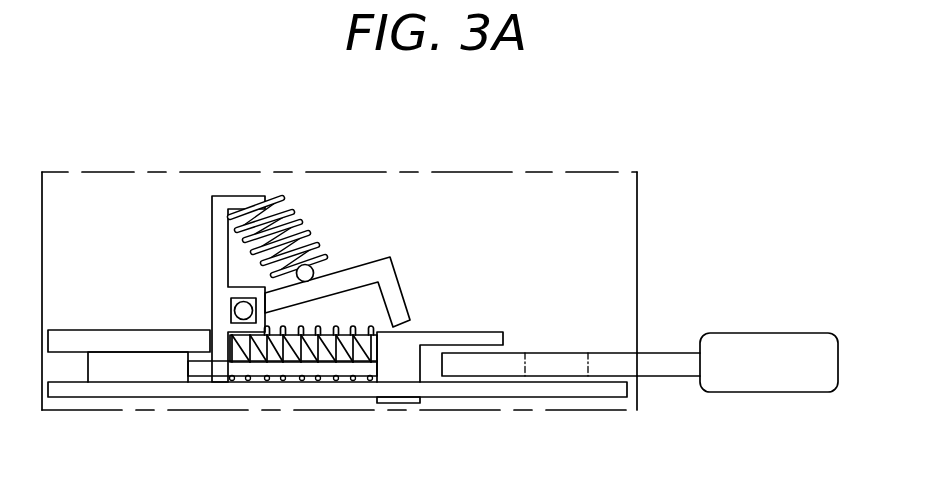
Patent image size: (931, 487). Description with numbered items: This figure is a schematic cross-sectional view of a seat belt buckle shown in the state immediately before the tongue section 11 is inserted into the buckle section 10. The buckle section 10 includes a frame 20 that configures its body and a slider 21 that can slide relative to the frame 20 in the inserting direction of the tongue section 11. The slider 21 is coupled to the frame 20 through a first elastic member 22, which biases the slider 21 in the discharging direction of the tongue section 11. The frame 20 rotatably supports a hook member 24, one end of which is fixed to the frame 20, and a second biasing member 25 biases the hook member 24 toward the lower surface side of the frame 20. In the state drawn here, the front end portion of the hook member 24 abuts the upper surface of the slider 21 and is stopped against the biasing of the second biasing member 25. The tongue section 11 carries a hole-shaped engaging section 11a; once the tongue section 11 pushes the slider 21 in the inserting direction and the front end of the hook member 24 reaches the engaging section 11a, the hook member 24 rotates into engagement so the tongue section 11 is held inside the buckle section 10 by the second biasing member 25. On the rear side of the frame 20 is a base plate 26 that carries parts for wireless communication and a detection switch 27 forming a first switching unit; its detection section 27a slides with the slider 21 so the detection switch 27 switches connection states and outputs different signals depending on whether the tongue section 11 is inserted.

The buckle section 10 is at (571, 172).
The tongue section 11 is at (659, 367).
The engaging section 11a is at (600, 367).
The frame 20 is at (212, 197).
The slider 21 is at (395, 372).
The first elastic member 22 is at (313, 370).
The hook member 24 is at (363, 275).
The second biasing member 25 is at (292, 215).
The base plate 26 is at (123, 330).
The detection switch 27 is at (128, 373).
The detection section 27a is at (258, 371).